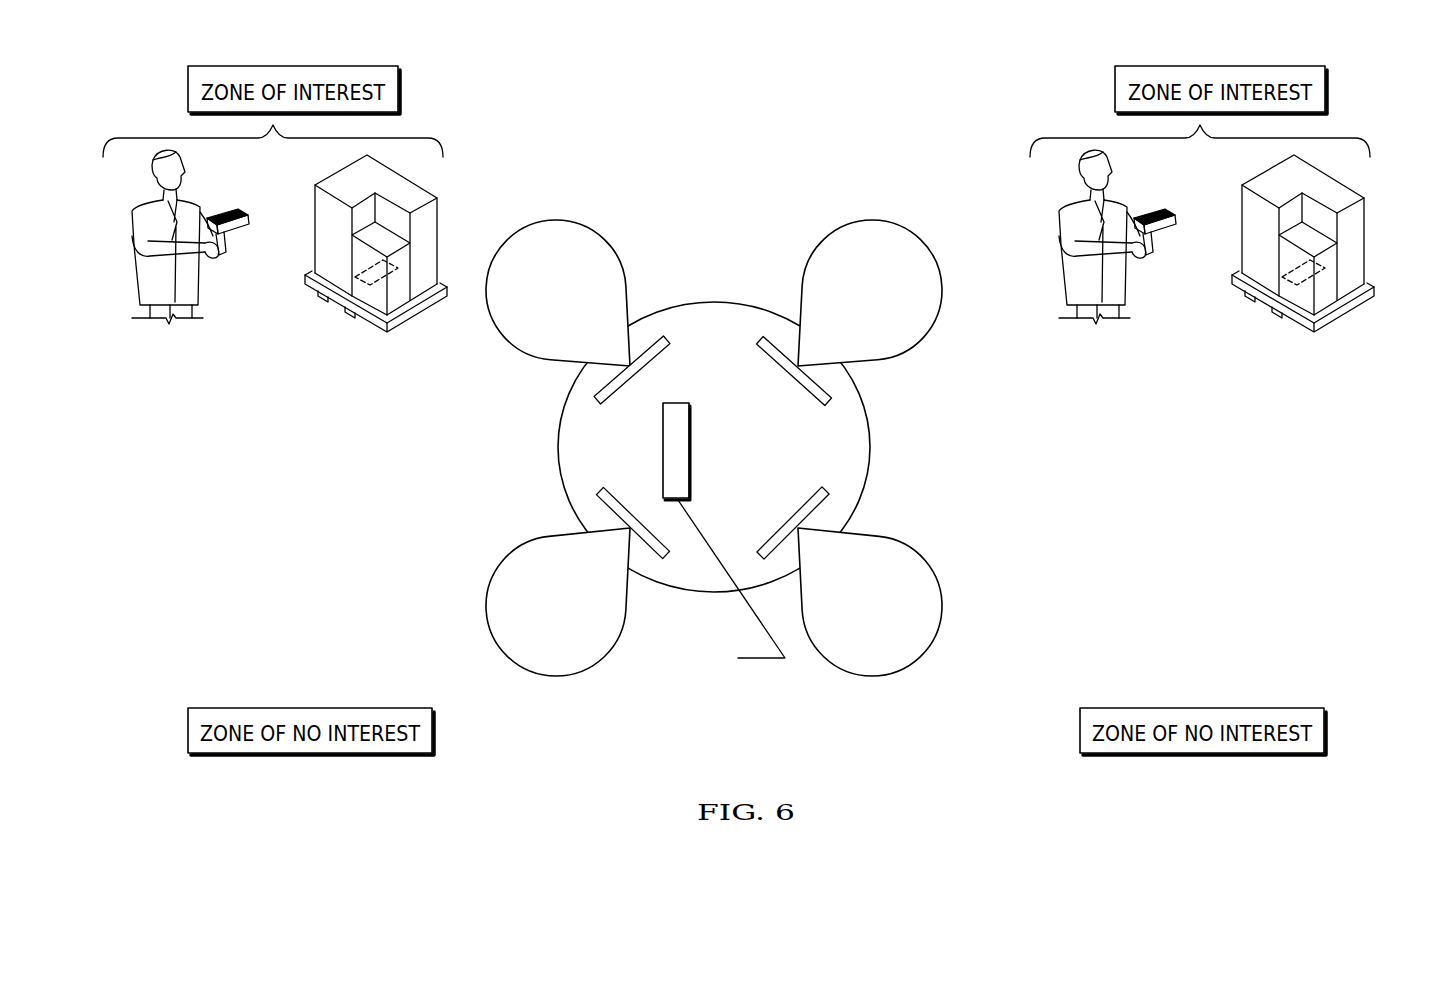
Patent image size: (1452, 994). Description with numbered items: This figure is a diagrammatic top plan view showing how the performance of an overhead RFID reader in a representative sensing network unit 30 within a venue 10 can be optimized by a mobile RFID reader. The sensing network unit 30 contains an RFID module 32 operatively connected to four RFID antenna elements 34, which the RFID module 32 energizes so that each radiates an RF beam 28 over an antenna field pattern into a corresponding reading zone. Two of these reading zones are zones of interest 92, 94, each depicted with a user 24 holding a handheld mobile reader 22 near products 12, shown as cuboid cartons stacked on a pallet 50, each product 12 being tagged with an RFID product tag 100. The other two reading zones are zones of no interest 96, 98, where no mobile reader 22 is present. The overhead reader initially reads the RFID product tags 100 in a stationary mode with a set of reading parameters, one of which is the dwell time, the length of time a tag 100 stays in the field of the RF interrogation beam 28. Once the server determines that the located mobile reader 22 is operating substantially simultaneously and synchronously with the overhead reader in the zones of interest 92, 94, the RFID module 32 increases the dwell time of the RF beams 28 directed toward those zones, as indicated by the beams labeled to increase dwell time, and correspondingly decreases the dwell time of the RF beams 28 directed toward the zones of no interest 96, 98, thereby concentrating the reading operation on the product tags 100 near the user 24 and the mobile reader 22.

The venue 10 is at (718, 232).
The product 12 is at (431, 228).
The mobile reader 22 is at (240, 246).
The user 24 is at (125, 243).
The RF beam 28 is at (962, 586).
The sensing network unit 30 is at (548, 436).
The RFID module 32 is at (663, 448).
The RFID antenna element 34 is at (882, 514).
The pallet 50 is at (404, 326).
The zone of interest 92 is at (188, 88).
The zone of interest 94 is at (1115, 88).
The zone of no interest 96 is at (188, 731).
The zone of no interest 98 is at (1080, 731).
The RFID product tag 100 is at (353, 272).